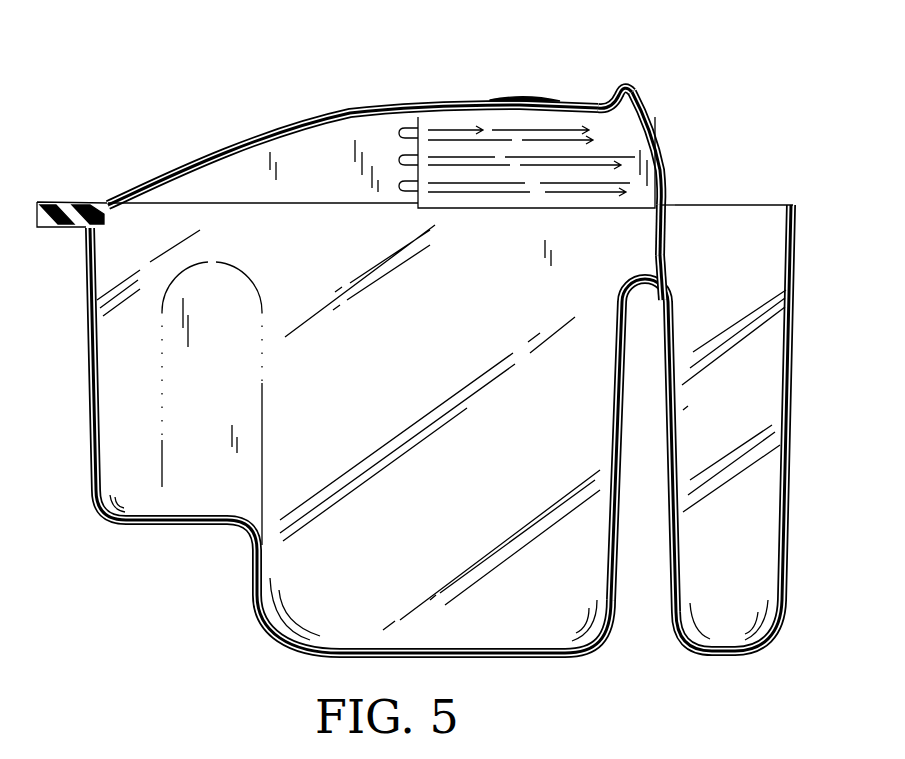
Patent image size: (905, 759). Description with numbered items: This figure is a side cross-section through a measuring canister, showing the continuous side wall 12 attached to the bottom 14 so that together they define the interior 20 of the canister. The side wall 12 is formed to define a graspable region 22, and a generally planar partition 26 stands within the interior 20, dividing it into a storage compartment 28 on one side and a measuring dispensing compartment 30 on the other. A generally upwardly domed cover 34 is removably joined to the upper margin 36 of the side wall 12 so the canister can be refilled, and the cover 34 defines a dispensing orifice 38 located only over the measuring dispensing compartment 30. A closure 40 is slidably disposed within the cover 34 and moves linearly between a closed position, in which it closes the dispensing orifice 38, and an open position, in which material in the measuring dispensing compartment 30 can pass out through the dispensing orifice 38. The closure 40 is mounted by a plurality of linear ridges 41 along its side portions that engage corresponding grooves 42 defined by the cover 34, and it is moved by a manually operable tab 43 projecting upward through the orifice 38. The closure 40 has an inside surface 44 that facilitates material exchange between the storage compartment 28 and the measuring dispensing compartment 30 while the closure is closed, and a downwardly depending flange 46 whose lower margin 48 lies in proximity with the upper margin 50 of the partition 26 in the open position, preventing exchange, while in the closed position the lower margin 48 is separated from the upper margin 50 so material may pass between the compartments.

The side wall 12 is at (89, 392).
The bottom 14 is at (500, 656).
The interior 20 is at (470, 282).
The graspable region 22 is at (163, 444).
The partition 26 is at (672, 522).
The storage compartment 28 is at (460, 500).
The measuring dispensing compartment 30 is at (747, 422).
The cover 34 is at (246, 128).
The upper margin 36 is at (213, 203).
The dispensing orifice 38 is at (786, 183).
The closure 40 is at (606, 106).
The linear ridges 41 is at (478, 158).
The grooves 42 is at (400, 153).
The manually operable tab 43 is at (629, 86).
The inside surface 44 is at (665, 268).
The flange 46 is at (652, 262).
The lower margin 48 is at (672, 282).
The upper margin 50 is at (795, 253).